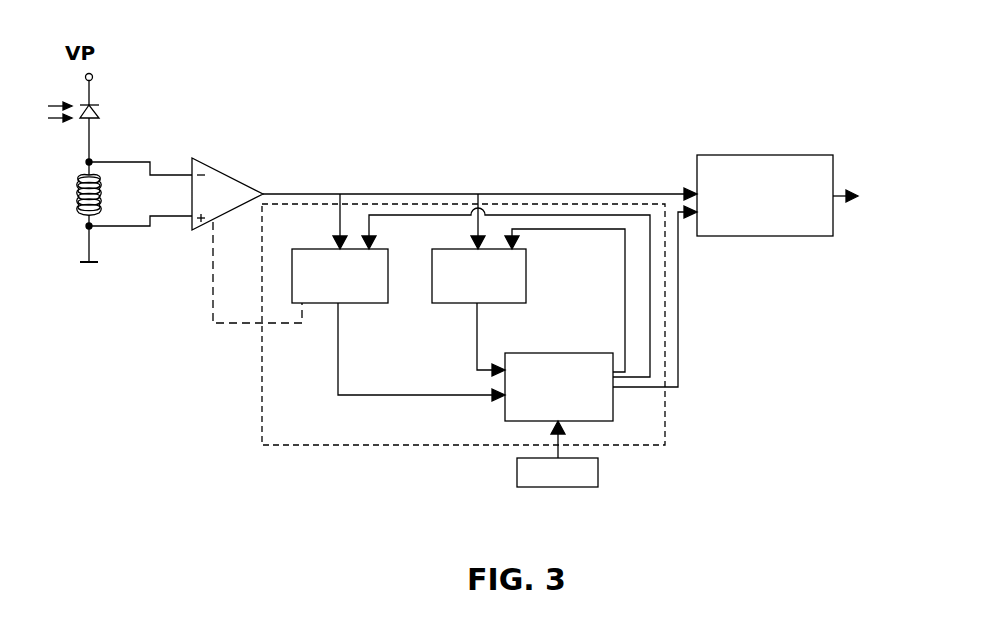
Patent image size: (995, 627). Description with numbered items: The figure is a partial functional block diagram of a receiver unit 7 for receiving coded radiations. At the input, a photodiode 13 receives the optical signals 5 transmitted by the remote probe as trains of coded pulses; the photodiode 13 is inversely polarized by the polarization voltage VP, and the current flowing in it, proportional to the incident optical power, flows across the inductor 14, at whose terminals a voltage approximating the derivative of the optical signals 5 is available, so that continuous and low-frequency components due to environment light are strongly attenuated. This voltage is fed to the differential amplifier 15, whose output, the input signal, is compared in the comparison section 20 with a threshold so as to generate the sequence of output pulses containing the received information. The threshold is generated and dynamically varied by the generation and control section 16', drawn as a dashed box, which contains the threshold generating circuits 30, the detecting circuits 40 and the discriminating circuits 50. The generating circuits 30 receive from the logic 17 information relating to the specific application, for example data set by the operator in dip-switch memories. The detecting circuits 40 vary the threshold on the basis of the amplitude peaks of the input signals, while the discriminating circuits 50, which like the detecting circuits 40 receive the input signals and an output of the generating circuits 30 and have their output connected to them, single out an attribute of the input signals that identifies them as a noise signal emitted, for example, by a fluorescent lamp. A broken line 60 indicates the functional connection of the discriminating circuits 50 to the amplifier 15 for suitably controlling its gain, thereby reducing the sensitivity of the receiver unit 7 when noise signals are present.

The optical signals 5 is at (62, 123).
The receiver unit 7 is at (560, 134).
The photodiode 13 is at (146, 110).
The inductor 14 is at (87, 208).
The amplifier 15 is at (227, 192).
The generation and control section 16' is at (456, 361).
The logic 17 is at (587, 473).
The comparison section 20 is at (738, 198).
The threshold generating circuits 30 is at (593, 403).
The detecting circuits 40 is at (497, 275).
The discriminating circuits 50 is at (333, 287).
The broken line 60 is at (213, 323).